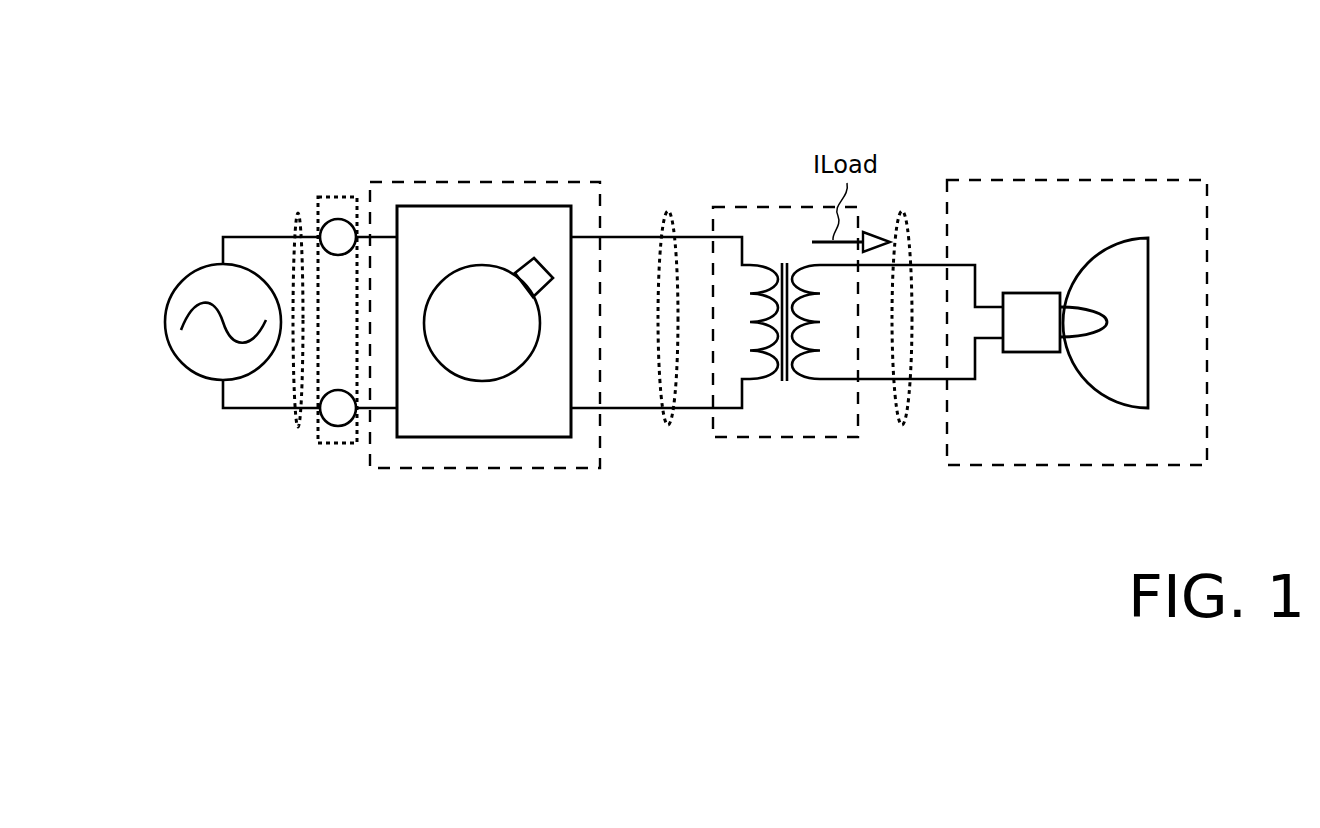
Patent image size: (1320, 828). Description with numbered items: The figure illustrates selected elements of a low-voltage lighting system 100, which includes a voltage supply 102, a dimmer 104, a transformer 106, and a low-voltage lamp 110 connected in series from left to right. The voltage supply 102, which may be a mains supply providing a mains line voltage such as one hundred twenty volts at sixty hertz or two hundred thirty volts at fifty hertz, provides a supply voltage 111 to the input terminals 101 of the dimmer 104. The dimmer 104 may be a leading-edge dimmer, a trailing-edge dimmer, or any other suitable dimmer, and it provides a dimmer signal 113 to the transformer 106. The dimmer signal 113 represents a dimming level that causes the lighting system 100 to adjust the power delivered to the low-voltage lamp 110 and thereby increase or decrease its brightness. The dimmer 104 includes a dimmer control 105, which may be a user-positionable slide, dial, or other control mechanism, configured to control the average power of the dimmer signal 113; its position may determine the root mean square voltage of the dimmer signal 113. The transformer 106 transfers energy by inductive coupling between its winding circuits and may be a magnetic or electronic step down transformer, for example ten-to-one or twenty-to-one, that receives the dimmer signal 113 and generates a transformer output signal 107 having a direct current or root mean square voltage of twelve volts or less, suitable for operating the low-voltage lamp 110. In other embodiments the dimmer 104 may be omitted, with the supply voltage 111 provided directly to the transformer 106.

The low-voltage lighting system 100 is at (1295, 130).
The voltage supply 102 is at (181, 281).
The supply voltage 111 is at (298, 428).
The input terminals 101 is at (338, 444).
The dimmer 104 is at (550, 419).
The dimmer control 105 is at (508, 329).
The dimmer signal 113 is at (668, 426).
The transformer 106 is at (835, 422).
The transformer output signal 107 is at (902, 426).
The low-voltage lamp 110 is at (1015, 452).